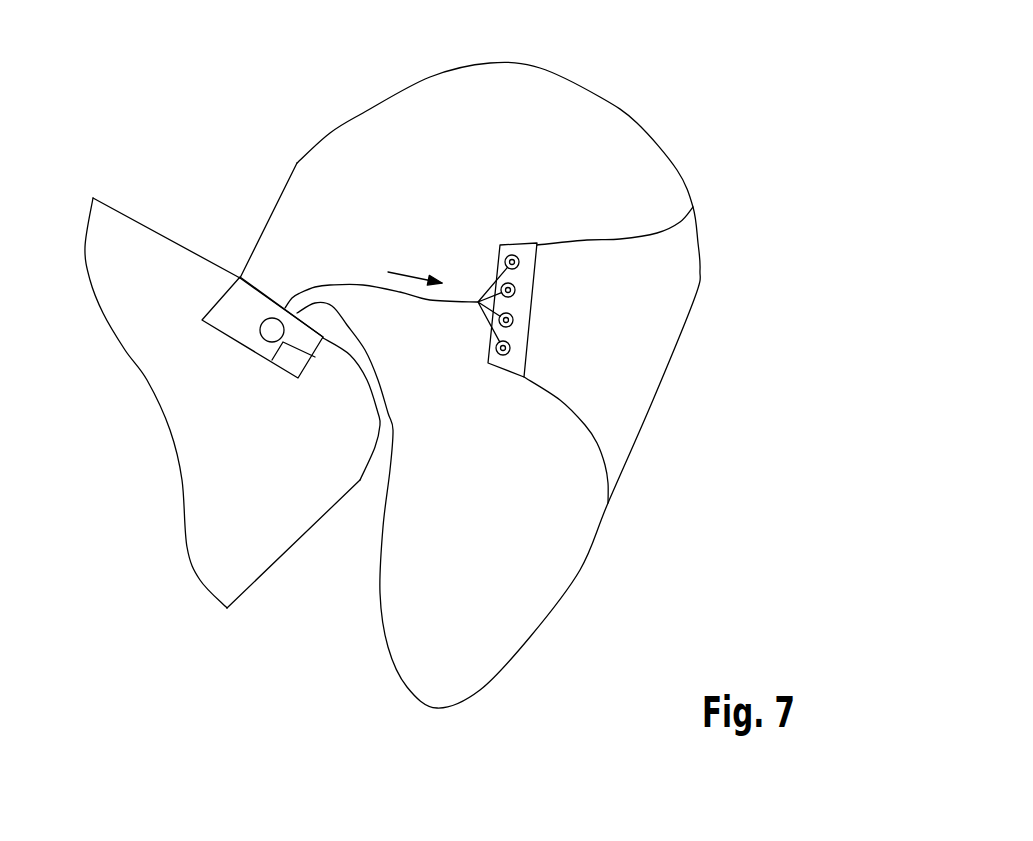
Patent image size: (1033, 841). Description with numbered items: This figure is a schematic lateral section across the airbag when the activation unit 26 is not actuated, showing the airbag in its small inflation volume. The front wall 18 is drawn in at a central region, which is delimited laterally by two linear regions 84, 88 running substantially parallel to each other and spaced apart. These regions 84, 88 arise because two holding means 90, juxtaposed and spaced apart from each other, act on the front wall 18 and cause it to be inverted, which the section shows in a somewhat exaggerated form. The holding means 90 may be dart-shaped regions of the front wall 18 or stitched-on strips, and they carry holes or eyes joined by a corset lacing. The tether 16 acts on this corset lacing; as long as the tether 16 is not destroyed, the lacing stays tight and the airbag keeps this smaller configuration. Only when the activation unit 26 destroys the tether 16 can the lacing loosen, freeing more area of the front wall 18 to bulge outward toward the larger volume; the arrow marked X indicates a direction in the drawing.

The tether 16 is at (363, 287).
The front wall 18 is at (670, 377).
The activation unit 26 is at (293, 360).
The linear region 84 is at (636, 195).
The linear region 88 is at (636, 195).
The holding means 90 is at (518, 243).
The direction X is at (412, 275).